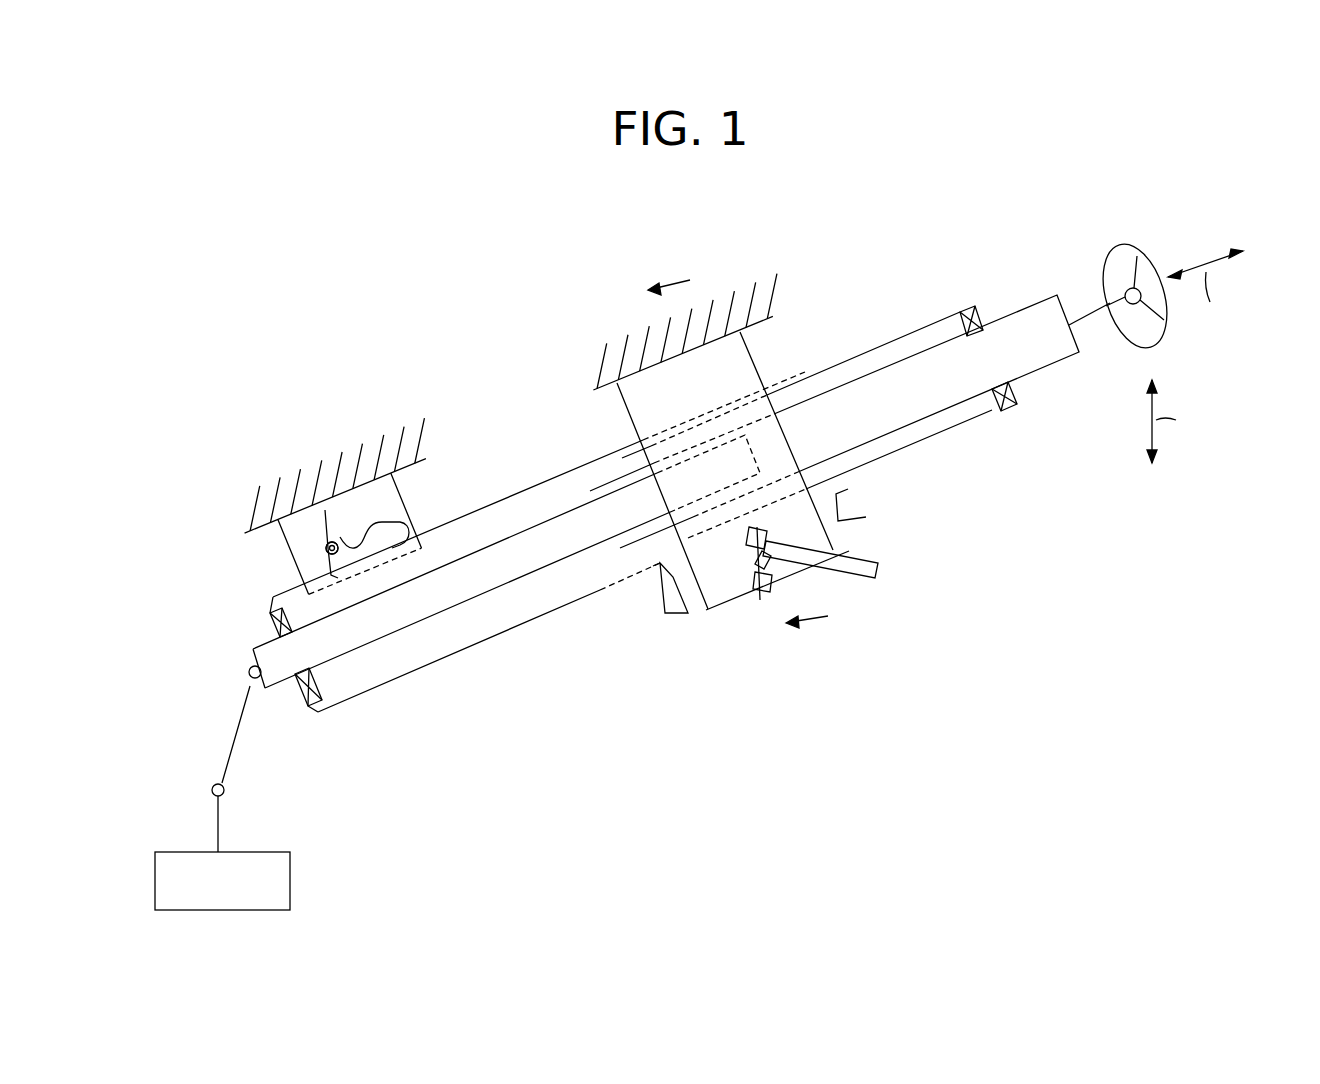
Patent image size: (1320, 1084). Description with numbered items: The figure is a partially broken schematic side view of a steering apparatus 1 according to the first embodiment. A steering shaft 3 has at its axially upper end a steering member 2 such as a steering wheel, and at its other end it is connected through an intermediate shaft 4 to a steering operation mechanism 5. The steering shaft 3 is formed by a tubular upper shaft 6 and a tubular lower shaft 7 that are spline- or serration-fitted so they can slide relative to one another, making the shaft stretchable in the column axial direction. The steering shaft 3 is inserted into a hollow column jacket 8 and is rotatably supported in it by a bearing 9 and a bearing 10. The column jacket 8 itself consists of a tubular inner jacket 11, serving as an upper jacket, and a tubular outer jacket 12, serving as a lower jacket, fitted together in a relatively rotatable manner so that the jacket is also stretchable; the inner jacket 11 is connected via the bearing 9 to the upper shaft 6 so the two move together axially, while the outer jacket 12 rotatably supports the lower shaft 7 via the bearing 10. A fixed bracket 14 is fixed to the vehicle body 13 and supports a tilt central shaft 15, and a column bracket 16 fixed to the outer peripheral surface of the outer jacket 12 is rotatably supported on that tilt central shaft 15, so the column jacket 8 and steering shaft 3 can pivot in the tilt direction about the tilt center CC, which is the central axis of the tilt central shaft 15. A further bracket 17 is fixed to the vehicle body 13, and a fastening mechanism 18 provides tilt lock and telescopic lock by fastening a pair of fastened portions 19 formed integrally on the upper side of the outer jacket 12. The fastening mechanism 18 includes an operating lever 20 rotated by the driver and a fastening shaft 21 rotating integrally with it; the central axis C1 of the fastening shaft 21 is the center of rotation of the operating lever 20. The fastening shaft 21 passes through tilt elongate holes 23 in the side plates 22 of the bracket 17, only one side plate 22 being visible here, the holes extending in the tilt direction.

The steering apparatus 1 is at (445, 340).
The steering member 2 is at (1118, 245).
The steering shaft 3 is at (1081, 306).
The intermediate shaft 4 is at (237, 722).
The steering operation mechanism 5 is at (291, 880).
The upper shaft 6 is at (1056, 362).
The lower shaft 7 is at (397, 642).
The column jacket 8 is at (891, 330).
The bearing 9 is at (1003, 413).
The bearing 10 is at (300, 702).
The inner jacket 11 is at (838, 365).
The outer jacket 12 is at (528, 488).
The vehicle body 13 is at (378, 455).
The fixed bracket 14 is at (400, 485).
The tilt central shaft 15 is at (322, 553).
The column bracket 16 is at (392, 518).
The bracket 17 is at (616, 412).
The fastening mechanism 18 is at (895, 548).
The fastened portion 19 is at (668, 596).
The operating lever 20 is at (880, 573).
The fastening shaft 21 is at (760, 575).
The side plate 22 is at (708, 612).
The tilt elongate hole 23 is at (772, 595).
The tilt center CC is at (331, 540).
The central axis of the fastening shaft C1 is at (868, 510).